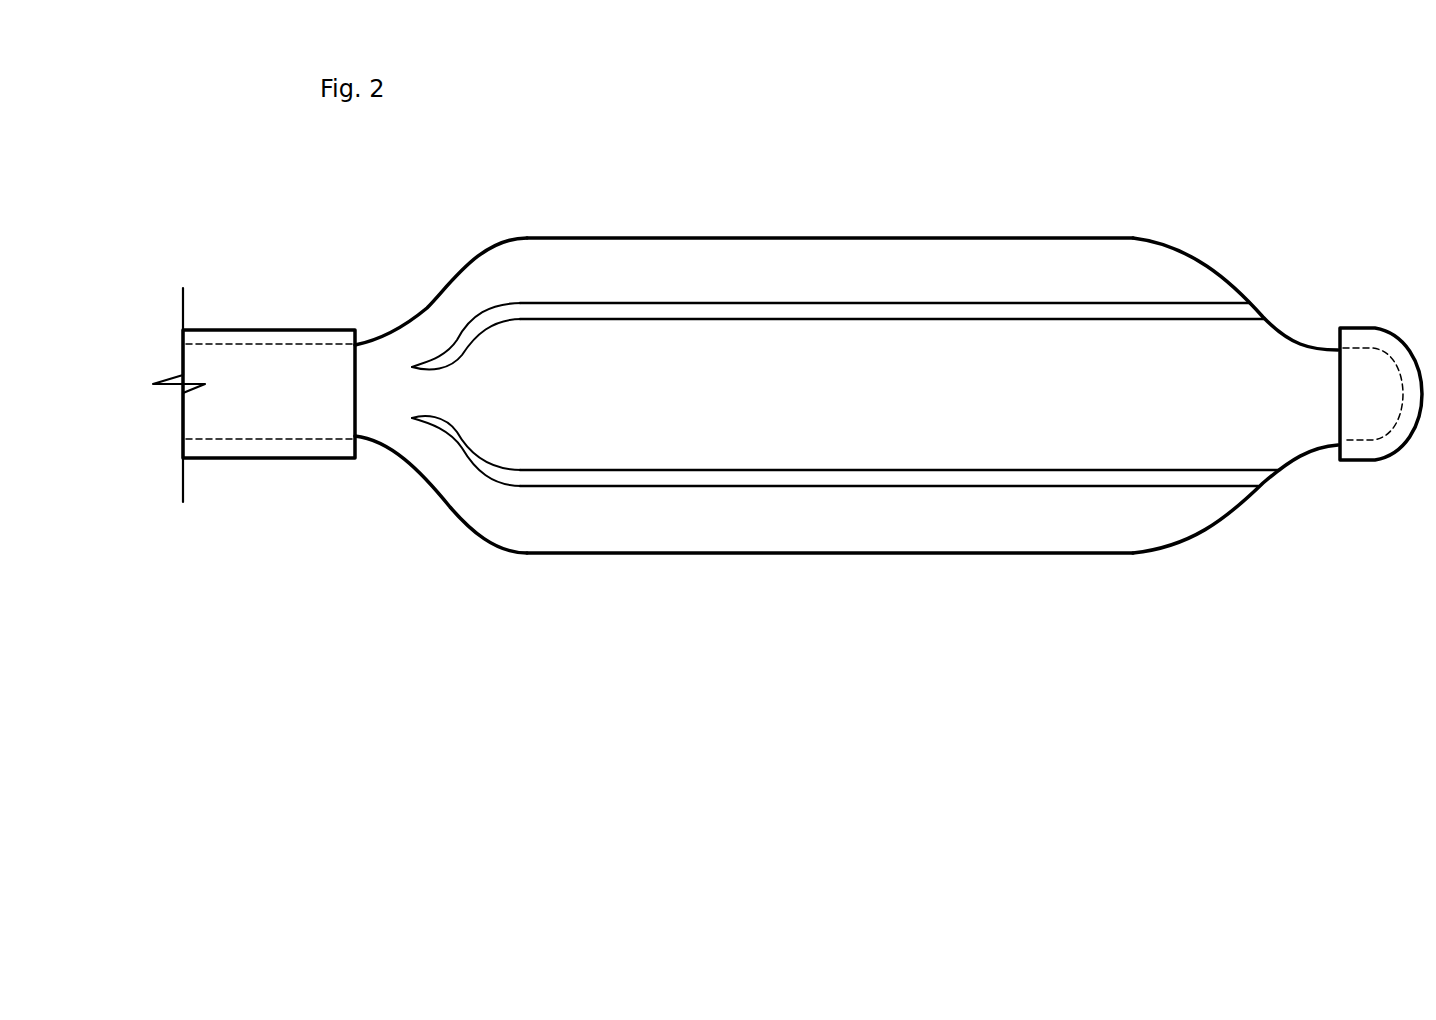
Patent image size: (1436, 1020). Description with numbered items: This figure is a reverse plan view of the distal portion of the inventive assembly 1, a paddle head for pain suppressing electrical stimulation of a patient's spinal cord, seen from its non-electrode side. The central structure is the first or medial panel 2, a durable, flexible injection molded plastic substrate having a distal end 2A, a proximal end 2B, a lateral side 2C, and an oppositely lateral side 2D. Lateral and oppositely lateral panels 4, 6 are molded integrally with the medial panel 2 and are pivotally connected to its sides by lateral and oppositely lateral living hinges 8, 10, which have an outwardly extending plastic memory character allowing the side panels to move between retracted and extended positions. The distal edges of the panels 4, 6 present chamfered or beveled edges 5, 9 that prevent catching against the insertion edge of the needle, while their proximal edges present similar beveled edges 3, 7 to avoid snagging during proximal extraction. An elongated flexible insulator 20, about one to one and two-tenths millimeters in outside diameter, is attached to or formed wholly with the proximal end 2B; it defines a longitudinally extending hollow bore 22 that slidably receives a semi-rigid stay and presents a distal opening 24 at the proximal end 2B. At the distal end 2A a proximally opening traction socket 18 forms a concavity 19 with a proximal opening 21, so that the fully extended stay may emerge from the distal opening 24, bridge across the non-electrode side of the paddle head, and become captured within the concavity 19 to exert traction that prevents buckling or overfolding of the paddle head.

The assembly 1 is at (883, 186).
The first or medial panel 2 is at (1175, 420).
The distal end 2A is at (1272, 380).
The proximal end 2B is at (447, 388).
The lateral side 2C is at (782, 330).
The oppositely lateral side 2D is at (865, 462).
The chamfered or beveled edge 3 is at (450, 510).
The lateral panel 4 is at (1010, 530).
The chamfered or beveled edge 5 is at (1235, 508).
The oppositely lateral panel 6 is at (683, 258).
The chamfered or beveled edge 7 is at (452, 280).
The lateral living hinge 8 is at (798, 478).
The chamfered or beveled edge 9 is at (1240, 285).
The oppositely lateral living hinge 10 is at (967, 305).
The traction socket 18 is at (1380, 328).
The concavity 19 is at (1375, 415).
The flexible insulator 20 is at (262, 327).
The proximal opening 21 is at (1338, 398).
The hollow bore 22 is at (268, 408).
The distal opening 24 is at (357, 390).